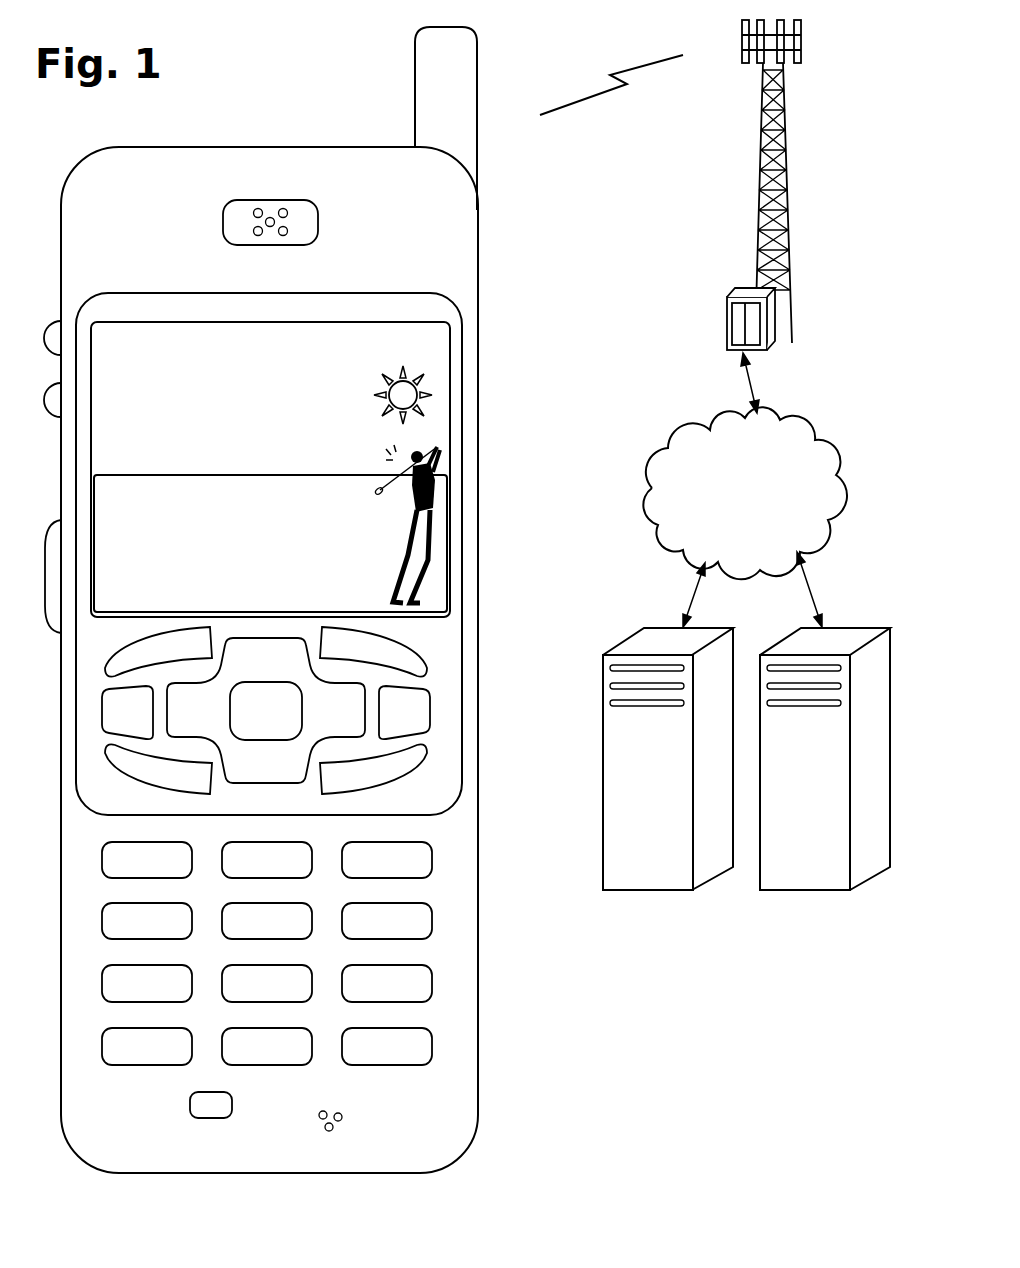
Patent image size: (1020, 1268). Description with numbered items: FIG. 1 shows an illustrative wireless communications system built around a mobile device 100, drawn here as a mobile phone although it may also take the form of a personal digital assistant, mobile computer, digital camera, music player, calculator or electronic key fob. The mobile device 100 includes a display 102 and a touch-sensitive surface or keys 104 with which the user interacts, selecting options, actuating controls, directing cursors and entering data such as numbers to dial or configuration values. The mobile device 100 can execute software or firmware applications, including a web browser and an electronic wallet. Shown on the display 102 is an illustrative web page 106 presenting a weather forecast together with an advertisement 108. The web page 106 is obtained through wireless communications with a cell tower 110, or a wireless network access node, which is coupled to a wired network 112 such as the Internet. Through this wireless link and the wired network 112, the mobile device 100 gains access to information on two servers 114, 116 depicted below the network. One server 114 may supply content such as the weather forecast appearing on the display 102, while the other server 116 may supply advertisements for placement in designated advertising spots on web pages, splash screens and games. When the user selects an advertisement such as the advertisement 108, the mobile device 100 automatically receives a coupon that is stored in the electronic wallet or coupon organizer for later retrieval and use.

The mobile device 100 is at (105, 1172).
The display 102 is at (448, 326).
The keys 104 is at (490, 627).
The web page 106 is at (440, 398).
The advertisement 108 is at (440, 562).
The cell tower 110 is at (757, 200).
The wired network 112 is at (662, 540).
The server 114 is at (647, 892).
The server 116 is at (787, 892).